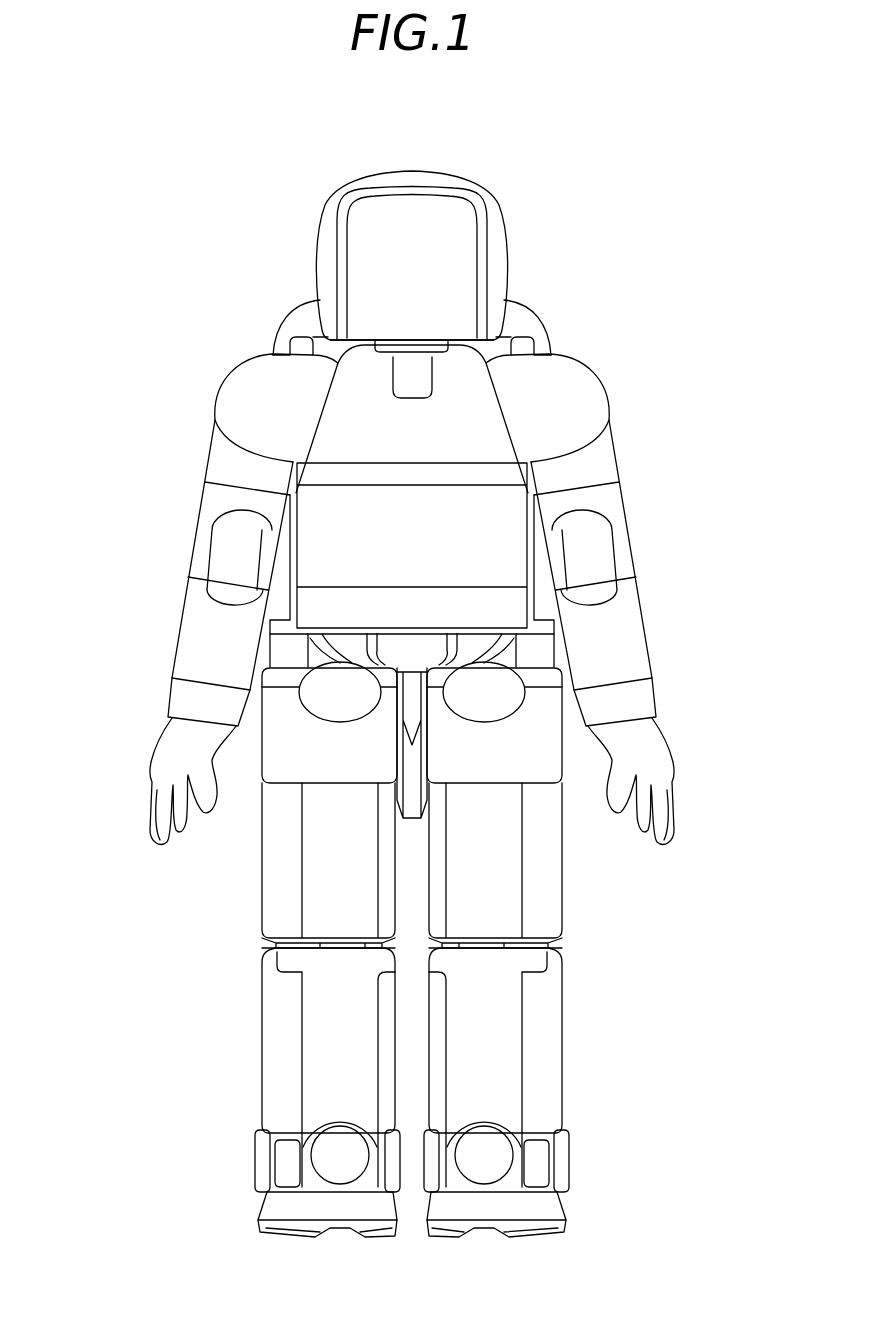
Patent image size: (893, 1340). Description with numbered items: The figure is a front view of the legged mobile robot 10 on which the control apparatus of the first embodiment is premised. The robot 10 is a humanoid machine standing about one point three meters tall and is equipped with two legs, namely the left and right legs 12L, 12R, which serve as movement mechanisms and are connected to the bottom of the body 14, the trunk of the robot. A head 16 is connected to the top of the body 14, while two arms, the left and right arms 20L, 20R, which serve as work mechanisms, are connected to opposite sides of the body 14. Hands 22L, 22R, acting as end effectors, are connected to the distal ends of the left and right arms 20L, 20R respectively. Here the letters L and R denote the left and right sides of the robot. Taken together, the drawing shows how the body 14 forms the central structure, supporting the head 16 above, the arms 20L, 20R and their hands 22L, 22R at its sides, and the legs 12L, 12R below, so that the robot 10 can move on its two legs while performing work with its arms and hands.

The legged mobile robot 10 is at (577, 301).
The right leg 12R is at (207, 961).
The left leg 12L is at (601, 952).
The body 14 is at (502, 568).
The head 16 is at (460, 190).
The right arm 20R is at (170, 462).
The left arm 20L is at (653, 435).
The right hand 22R is at (182, 755).
The left hand 22L is at (648, 750).